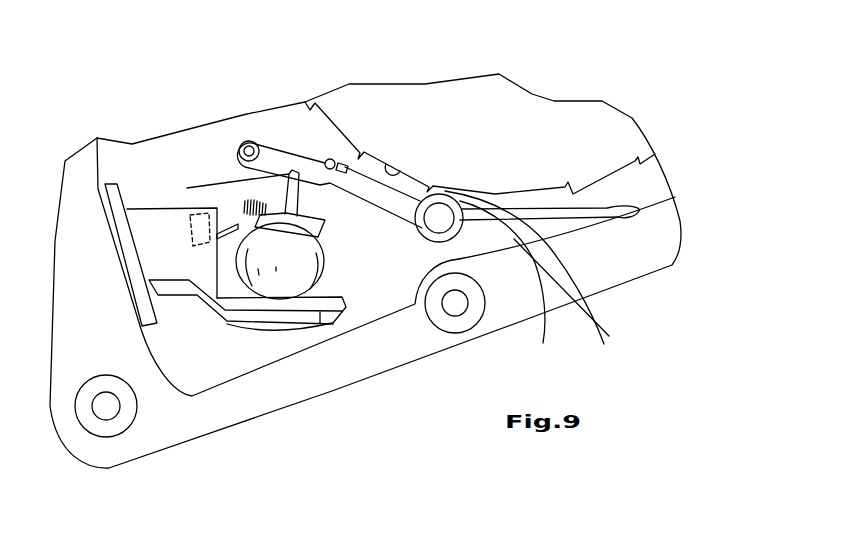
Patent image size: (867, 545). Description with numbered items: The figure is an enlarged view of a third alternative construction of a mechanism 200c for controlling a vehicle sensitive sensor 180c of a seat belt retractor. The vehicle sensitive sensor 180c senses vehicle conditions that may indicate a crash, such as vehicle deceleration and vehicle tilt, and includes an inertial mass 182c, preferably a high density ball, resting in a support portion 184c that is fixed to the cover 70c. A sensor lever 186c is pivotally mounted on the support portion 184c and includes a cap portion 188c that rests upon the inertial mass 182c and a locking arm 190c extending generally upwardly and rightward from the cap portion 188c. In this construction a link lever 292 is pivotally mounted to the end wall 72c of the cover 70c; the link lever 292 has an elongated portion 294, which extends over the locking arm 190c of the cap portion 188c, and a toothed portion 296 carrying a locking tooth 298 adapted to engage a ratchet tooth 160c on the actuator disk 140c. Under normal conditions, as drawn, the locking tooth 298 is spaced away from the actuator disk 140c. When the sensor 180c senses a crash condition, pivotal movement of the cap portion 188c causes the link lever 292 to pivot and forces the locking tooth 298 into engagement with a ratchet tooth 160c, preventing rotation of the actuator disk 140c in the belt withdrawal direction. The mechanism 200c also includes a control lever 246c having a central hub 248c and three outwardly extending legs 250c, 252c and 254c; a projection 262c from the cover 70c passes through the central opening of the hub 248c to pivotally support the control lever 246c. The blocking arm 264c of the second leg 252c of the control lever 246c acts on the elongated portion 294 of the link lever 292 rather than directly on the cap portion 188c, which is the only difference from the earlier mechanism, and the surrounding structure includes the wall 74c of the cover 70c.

The mechanism 200c is at (125, 120).
The cover 70c is at (156, 410).
The actuator disk 140c is at (584, 140).
The elongated portion 294 is at (237, 160).
The link lever 292 is at (258, 144).
The blocking arm 264c is at (325, 159).
The locking tooth 298 is at (339, 160).
The toothed portion 296 is at (345, 174).
The ratchet tooth 160c is at (392, 171).
The second leg 252c is at (384, 200).
The projection 262c is at (435, 221).
The third leg 254c is at (605, 214).
The control lever 246c is at (455, 246).
The central hub 248c is at (518, 286).
The end wall 72c is at (536, 281).
The first leg 250c is at (596, 290).
The rear wall 74c is at (612, 262).
The cap portion 188c is at (322, 220).
The locking arm 190c is at (257, 184).
The sensor lever 186c is at (222, 210).
The support portion 184c is at (282, 318).
The inertial mass 182c is at (327, 273).
The vehicle sensitive sensor 180c is at (244, 338).